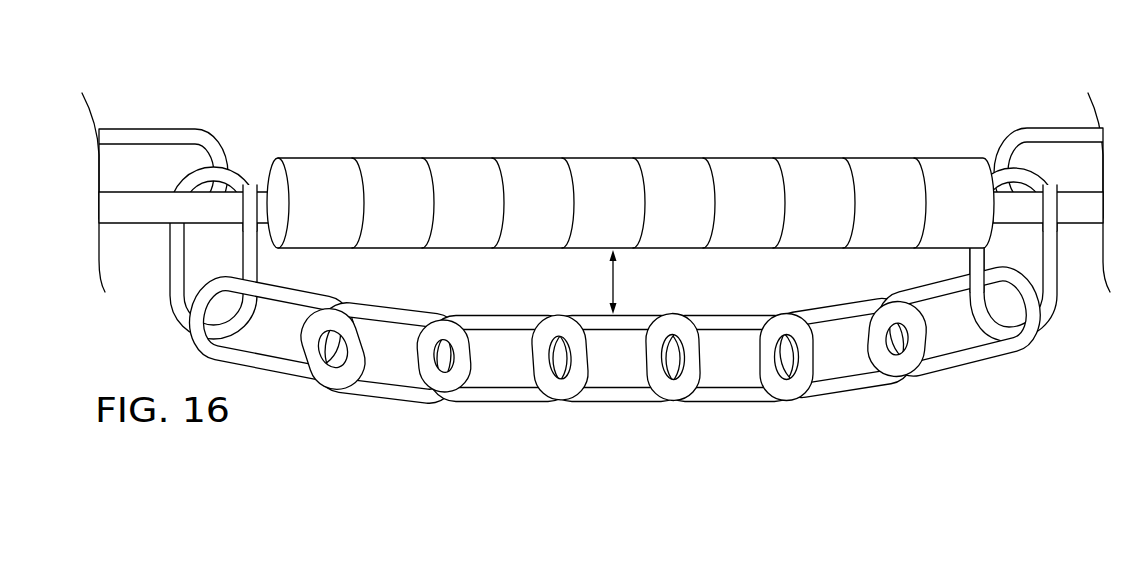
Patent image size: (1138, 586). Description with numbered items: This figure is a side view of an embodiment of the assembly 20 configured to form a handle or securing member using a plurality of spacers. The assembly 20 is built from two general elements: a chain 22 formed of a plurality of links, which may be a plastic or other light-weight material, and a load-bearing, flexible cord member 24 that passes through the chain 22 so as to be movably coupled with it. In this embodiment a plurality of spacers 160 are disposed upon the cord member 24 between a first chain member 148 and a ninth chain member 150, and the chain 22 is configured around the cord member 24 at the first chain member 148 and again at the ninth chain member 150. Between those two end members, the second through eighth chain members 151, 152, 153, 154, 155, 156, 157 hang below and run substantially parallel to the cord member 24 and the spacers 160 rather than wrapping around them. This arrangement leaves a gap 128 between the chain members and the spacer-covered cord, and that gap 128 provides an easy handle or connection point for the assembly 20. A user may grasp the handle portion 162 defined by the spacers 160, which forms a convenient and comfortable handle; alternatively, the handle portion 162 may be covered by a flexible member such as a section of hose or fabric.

The assembly 20 is at (601, 140).
The chain 22 is at (613, 279).
The flexible cord member 24 is at (125, 226).
The gap 128 is at (615, 282).
The first chain member 148 is at (232, 164).
The ninth chain member 150 is at (995, 187).
The second chain member 151 is at (263, 380).
The third chain member 152 is at (408, 404).
The fourth chain member 153 is at (540, 405).
The fifth chain member 154 is at (640, 400).
The sixth chain member 155 is at (767, 405).
The seventh chain member 156 is at (887, 390).
The eighth chain member 157 is at (1003, 360).
The spacers 160 is at (630, 140).
The handle portion 162 is at (614, 98).